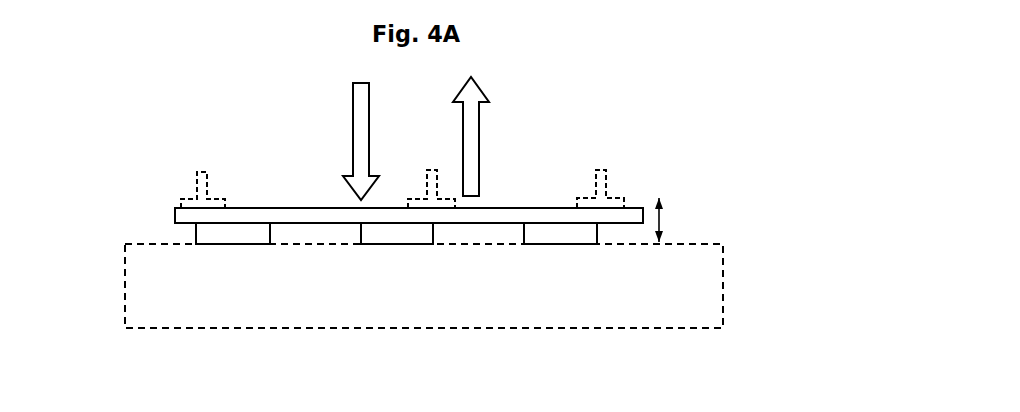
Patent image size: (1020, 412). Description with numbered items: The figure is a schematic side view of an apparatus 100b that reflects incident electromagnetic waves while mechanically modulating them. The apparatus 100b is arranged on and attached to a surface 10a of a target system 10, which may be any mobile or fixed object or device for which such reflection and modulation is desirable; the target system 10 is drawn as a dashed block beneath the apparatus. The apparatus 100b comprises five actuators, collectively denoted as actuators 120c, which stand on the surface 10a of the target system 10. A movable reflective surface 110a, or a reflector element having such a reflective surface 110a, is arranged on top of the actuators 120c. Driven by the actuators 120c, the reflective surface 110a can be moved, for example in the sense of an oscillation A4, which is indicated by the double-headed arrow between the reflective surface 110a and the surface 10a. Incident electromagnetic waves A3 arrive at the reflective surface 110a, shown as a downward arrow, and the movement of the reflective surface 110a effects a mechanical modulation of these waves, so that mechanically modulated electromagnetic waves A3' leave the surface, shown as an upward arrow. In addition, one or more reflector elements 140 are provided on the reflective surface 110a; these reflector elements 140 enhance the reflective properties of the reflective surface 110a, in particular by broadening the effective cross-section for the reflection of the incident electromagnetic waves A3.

The apparatus 100b is at (359, 173).
The movable reflective surface 110a is at (298, 206).
The actuators 120c is at (130, 234).
The reflector elements 140 is at (600, 172).
The target system 10 is at (453, 254).
The surface of the target system 10a is at (168, 236).
The incident electromagnetic waves A3 is at (372, 141).
The mechanically modulated electromagnetic waves A3' is at (486, 136).
The oscillation A4 is at (674, 220).